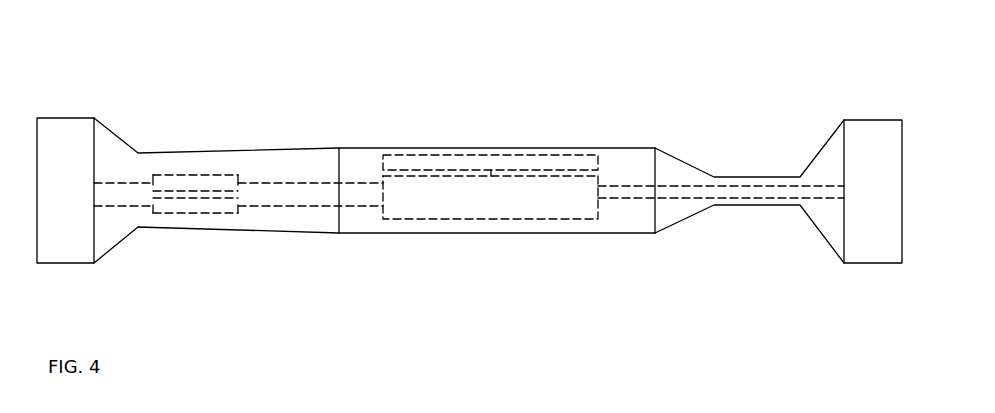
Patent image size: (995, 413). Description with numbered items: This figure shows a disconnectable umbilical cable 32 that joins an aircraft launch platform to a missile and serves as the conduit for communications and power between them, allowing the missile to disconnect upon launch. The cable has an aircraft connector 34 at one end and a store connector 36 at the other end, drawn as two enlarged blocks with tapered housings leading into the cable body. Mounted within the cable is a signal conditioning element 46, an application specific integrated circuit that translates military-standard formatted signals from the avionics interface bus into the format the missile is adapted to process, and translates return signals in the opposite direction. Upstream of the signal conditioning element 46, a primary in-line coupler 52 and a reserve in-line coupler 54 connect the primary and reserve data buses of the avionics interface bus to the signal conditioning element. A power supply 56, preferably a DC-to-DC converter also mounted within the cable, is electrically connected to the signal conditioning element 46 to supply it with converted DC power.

The umbilical cable 32 is at (480, 55).
The aircraft connector 34 is at (267, 227).
The store connector 36 is at (757, 176).
The signal conditioning element 46 is at (535, 220).
The primary in-line coupler 52 is at (220, 175).
The reserve in-line coupler 54 is at (215, 213).
The power supply 56 is at (528, 155).